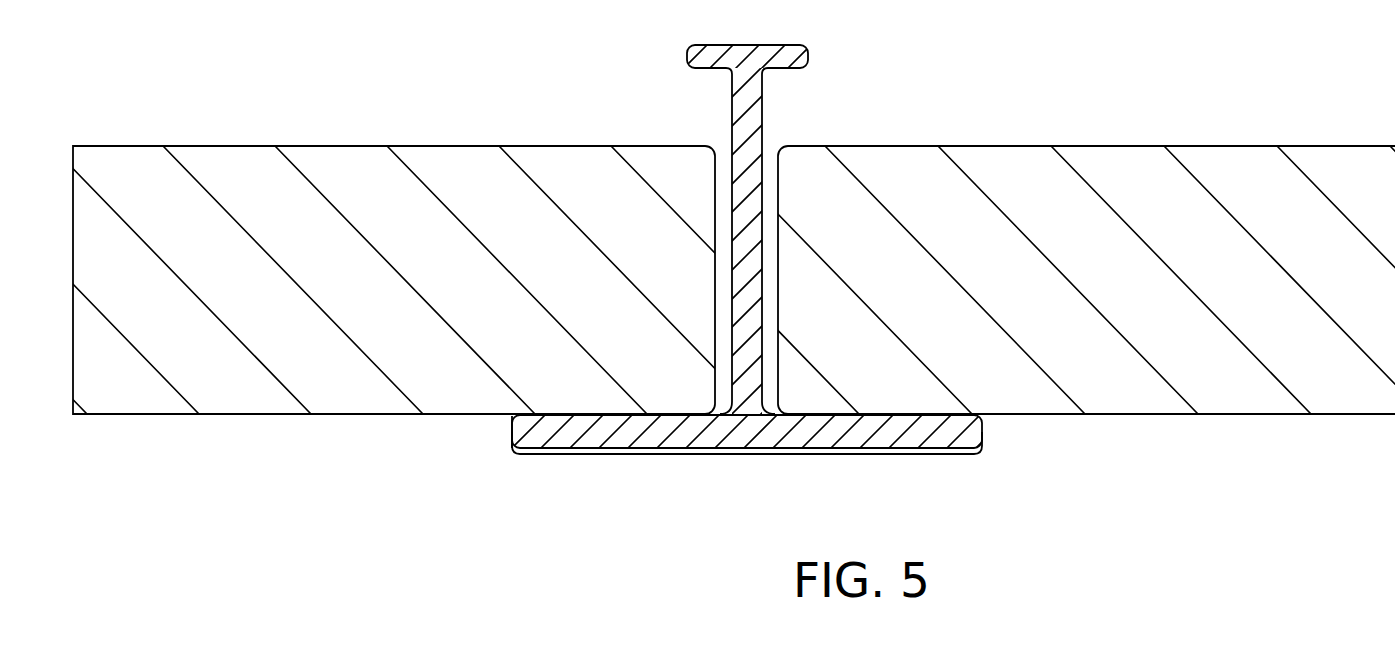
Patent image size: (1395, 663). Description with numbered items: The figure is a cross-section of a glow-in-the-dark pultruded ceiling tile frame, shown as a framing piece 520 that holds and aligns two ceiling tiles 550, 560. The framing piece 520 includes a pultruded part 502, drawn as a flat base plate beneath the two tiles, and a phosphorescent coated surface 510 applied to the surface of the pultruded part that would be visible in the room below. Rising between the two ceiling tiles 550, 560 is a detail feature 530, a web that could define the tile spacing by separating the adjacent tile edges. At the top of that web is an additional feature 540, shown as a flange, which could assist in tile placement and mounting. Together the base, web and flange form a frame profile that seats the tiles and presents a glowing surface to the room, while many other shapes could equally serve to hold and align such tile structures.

The pultruded part 502 is at (970, 433).
The phosphorescent coated surface 510 is at (925, 455).
The framing piece 520 is at (613, 448).
The detail feature 530 is at (763, 116).
The additional feature 540 is at (807, 53).
The ceiling tile 550 is at (445, 158).
The ceiling tile 560 is at (1003, 158).